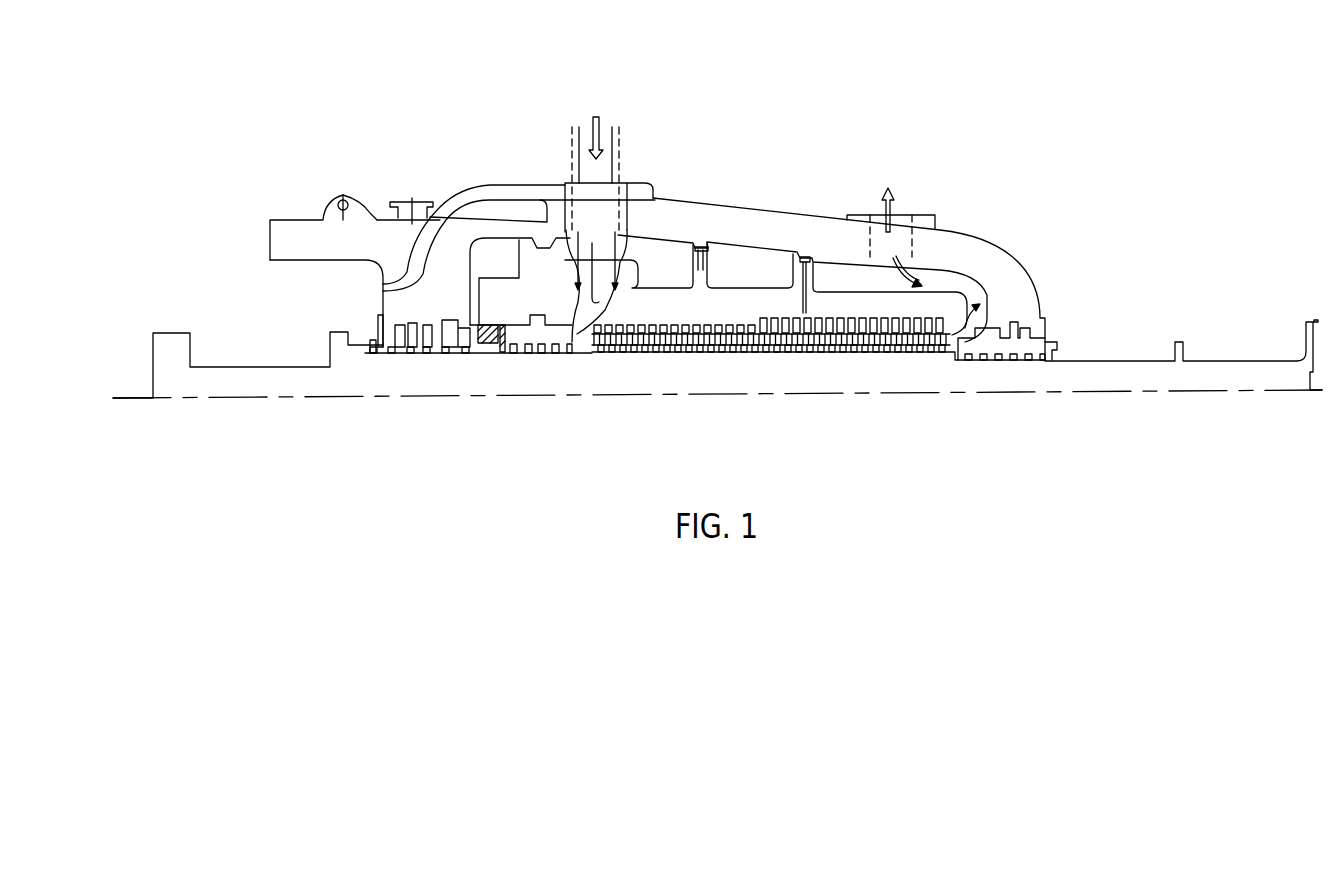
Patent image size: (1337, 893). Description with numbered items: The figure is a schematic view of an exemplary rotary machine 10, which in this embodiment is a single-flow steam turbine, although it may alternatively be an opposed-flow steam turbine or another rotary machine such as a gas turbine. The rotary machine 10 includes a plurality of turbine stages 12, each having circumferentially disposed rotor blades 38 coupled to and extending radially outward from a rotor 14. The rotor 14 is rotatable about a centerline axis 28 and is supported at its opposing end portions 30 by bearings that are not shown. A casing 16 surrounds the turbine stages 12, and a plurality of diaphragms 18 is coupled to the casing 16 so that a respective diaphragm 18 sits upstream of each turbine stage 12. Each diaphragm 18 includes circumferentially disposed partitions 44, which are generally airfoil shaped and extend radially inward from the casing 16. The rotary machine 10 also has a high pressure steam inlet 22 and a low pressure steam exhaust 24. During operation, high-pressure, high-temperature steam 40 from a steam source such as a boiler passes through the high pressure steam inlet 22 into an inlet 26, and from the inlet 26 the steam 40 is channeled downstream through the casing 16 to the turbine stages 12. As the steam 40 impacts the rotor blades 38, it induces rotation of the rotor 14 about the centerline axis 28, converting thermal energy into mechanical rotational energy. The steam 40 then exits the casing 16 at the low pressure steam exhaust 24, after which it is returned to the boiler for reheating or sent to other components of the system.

The rotary machine 10 is at (920, 70).
The turbine stages 12 is at (718, 385).
The rotor 14 is at (1223, 350).
The casing 16 is at (1022, 238).
The diaphragms 18 is at (737, 312).
The high pressure steam inlet 22 is at (632, 135).
The low pressure steam exhaust 24 is at (912, 208).
The inlet 26 is at (573, 352).
The centerline axis 28 is at (1270, 391).
The opposing end portions 30 is at (216, 366).
The rotor blades 38 is at (741, 363).
The steam 40 is at (596, 118).
The partitions 44 is at (726, 312).